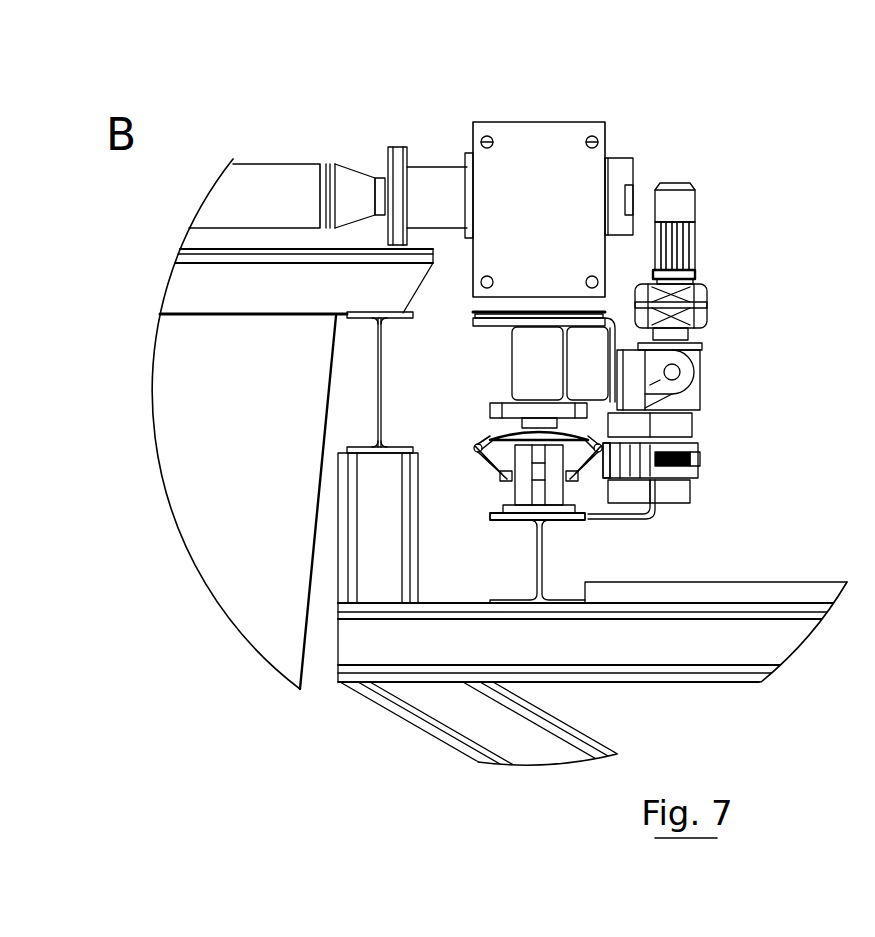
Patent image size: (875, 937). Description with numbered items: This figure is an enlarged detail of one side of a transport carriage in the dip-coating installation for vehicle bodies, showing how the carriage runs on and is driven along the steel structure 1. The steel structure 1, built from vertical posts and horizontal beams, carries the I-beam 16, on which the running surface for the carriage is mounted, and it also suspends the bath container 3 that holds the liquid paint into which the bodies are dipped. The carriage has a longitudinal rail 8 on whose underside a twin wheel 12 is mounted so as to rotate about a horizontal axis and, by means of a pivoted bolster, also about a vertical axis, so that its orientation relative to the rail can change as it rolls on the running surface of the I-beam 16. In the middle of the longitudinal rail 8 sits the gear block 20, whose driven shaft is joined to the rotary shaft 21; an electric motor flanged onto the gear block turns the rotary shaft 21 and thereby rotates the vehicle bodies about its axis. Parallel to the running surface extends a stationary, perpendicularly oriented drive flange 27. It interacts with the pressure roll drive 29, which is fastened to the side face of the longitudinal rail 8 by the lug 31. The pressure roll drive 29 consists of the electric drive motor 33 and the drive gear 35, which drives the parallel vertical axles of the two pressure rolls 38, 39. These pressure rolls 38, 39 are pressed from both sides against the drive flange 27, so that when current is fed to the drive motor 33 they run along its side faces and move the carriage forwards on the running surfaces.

The steel structure 1 is at (712, 638).
The bath container 3 is at (250, 423).
The longitudinal rail 8 is at (512, 367).
The twin wheel 12 is at (553, 493).
The I-beam 16 is at (537, 559).
The gear block 20 is at (535, 172).
The rotary shaft 21 is at (290, 206).
The drive flange 27 is at (675, 492).
The pressure roll drive 29 is at (700, 388).
The lug 31 is at (693, 412).
The electric drive motor 33 is at (677, 212).
The drive gear 35 is at (700, 372).
The pressure roll 38 is at (623, 493).
The pressure roll 39 is at (675, 497).